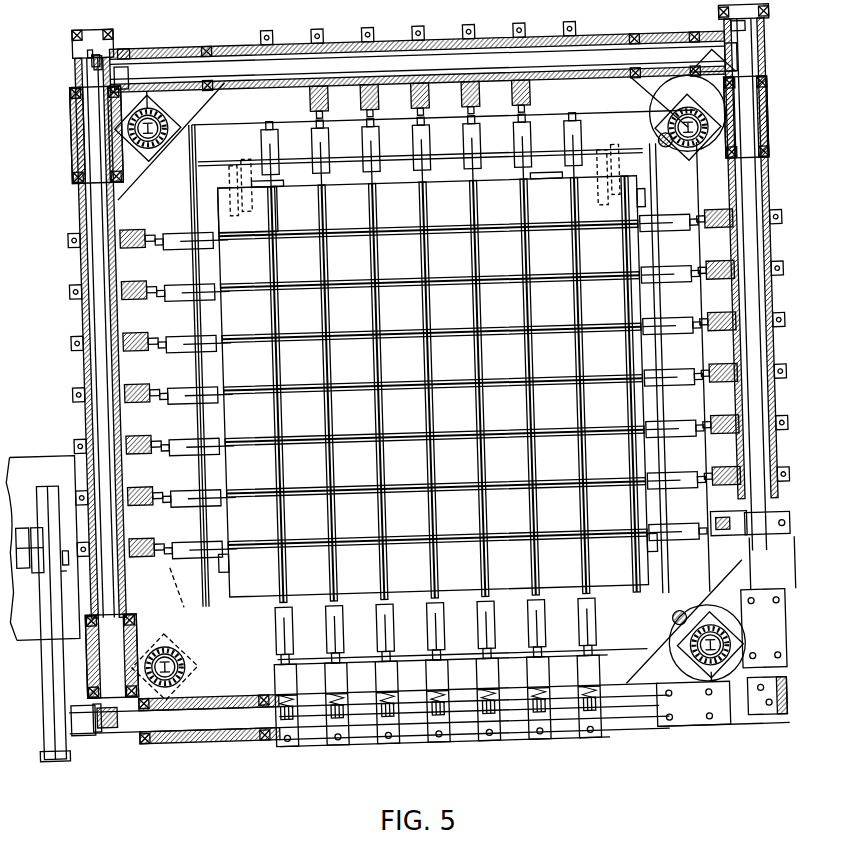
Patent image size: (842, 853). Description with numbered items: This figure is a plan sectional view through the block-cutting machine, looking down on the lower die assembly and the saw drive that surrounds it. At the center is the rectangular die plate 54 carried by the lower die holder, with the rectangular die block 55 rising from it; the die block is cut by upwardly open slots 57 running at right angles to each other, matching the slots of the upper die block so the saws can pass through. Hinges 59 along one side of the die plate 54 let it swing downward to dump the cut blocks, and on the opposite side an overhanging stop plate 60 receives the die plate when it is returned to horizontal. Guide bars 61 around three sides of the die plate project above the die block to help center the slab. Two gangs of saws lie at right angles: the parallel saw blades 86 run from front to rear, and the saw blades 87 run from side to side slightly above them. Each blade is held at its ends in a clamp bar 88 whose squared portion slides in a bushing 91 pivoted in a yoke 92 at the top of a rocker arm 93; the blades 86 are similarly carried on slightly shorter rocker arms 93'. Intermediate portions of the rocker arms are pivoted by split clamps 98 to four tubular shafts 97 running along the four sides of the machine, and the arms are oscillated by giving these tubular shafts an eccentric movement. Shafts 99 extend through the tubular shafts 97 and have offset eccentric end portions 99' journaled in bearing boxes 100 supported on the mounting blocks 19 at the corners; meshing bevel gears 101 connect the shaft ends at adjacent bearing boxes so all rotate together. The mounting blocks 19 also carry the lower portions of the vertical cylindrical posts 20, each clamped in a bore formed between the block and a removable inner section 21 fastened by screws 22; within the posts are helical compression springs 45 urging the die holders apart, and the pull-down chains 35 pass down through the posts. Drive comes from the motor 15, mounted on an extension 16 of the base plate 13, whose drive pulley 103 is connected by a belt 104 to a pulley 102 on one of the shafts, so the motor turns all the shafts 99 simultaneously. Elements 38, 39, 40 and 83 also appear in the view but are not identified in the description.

The base plate 13 is at (310, 720).
The driving motor 15 is at (6, 450).
The extension of the base plate 16 is at (60, 445).
The mounting blocks 19 is at (110, 118).
The vertical tubes or cylindrical posts 20 is at (185, 112).
The removable inner sections 21 is at (138, 136).
The screws 22 is at (166, 585).
The pull-down chains 35 is at (160, 125).
The frame plate 38 is at (348, 130).
The rounded corner bracket 39 is at (735, 118).
The mounting plate 40 is at (690, 60).
The helical compression springs 45 is at (160, 100).
The die plate 54 is at (200, 172).
The die block 55 is at (232, 215).
The slots 57 is at (405, 326).
The hinges 59 is at (244, 165).
The stop plate 60 is at (355, 610).
The guide bars 61 is at (282, 176).
The pivot pin 83 is at (667, 152).
The saw blades 86 is at (648, 278).
The saw blades 87 is at (375, 175).
The clamp bar 88 is at (530, 172).
The bushing 91 is at (335, 665).
The yoke 92 is at (438, 665).
The rocker arm 93 is at (428, 374).
The rocker arms 93' is at (431, 383).
The tubular shafts 97 is at (458, 40).
The split clamps 98 is at (274, 33).
The shafts 99 is at (400, 400).
The eccentric end portions 99' is at (409, 401).
The bearing boxes 100 is at (102, 52).
The bevel gears 101 is at (98, 44).
The pulley 102 is at (40, 750).
The drive pulley 103 is at (38, 490).
The belt 104 is at (52, 645).